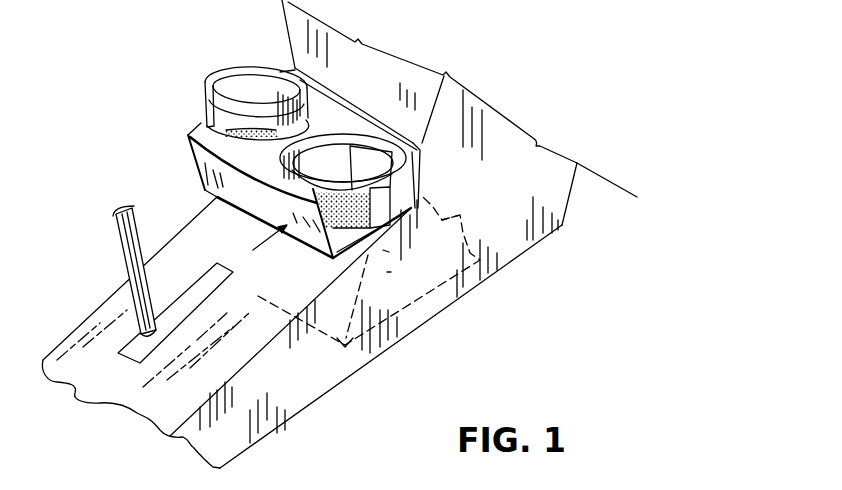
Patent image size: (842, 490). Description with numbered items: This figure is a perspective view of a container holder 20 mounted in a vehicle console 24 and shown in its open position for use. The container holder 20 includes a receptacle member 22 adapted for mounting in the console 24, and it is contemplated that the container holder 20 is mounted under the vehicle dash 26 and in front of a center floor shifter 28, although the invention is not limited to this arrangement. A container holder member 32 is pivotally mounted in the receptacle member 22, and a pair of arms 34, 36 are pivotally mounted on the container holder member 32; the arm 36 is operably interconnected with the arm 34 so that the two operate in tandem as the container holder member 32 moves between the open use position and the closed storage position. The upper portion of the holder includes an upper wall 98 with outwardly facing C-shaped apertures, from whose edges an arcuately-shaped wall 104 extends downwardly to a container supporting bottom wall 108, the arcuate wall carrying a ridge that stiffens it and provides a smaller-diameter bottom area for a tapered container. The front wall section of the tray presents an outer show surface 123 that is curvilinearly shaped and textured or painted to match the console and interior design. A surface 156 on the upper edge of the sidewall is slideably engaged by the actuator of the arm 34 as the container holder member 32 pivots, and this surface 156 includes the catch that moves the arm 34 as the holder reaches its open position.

The container holder 20 is at (153, 87).
The receptacle member 22 is at (409, 304).
The console 24 is at (327, 394).
The vehicle dash 26 is at (607, 182).
The center floor shifter 28 is at (118, 251).
The container holder member 32 is at (332, 113).
The arm 34 is at (403, 190).
The arm 36 is at (236, 68).
The upper wall 98 is at (258, 163).
The arcuately-shaped wall 104 is at (307, 160).
The bottom wall 108 is at (343, 207).
The outer show surface 123 is at (268, 211).
The surface 156 is at (433, 198).